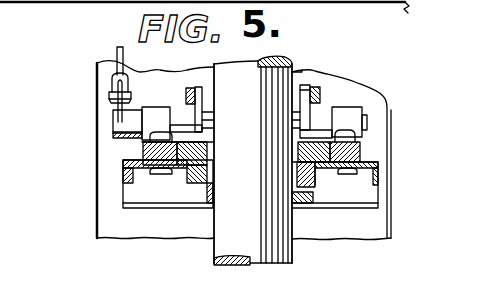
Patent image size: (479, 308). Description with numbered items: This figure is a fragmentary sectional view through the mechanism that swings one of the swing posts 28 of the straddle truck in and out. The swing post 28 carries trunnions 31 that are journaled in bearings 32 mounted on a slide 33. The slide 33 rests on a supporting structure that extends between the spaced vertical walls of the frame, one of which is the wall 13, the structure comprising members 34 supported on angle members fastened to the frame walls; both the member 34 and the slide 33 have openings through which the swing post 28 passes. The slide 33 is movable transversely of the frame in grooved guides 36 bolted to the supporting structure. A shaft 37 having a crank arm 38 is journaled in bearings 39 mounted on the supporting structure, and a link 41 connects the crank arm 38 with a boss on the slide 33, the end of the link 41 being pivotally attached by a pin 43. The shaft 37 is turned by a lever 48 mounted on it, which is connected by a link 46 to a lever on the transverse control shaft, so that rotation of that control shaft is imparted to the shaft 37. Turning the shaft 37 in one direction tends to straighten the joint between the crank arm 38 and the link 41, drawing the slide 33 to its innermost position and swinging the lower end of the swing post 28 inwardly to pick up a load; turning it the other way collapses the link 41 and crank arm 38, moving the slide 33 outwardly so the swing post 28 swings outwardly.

The vertical wall 13 is at (97, 63).
The swing post 28 is at (214, 258).
The trunnion 31 is at (313, 193).
The bearing 32 is at (315, 207).
The slide 33 is at (318, 132).
The member 34 is at (140, 163).
The grooved guide 36 is at (143, 150).
The shaft 37 is at (367, 122).
The crank arm 38 is at (300, 97).
The bearing 39 is at (157, 107).
The link 41 is at (190, 88).
The pin 43 is at (306, 122).
The link 46 is at (115, 48).
The lever 48 is at (125, 118).